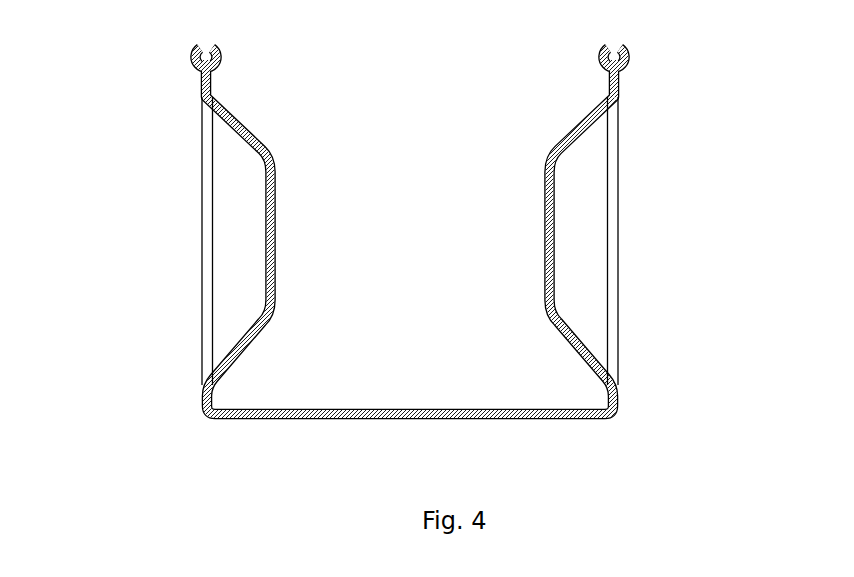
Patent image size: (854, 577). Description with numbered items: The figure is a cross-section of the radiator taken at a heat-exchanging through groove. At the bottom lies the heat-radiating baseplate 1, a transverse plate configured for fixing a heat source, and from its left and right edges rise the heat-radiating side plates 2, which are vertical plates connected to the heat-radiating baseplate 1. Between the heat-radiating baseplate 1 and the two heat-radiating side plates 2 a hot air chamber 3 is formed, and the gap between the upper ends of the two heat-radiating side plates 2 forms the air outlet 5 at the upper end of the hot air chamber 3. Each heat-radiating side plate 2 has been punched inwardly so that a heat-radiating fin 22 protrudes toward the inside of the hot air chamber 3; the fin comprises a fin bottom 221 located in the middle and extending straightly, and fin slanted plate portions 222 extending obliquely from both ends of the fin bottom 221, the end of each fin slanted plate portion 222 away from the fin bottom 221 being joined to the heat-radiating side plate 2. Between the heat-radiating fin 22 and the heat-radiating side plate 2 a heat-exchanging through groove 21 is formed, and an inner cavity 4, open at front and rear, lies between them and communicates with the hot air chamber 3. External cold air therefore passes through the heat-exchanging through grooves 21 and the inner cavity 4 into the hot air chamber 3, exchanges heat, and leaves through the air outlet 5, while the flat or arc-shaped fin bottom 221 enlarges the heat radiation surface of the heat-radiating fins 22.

The heat-radiating baseplate 1 is at (522, 418).
The heat-radiating side plates 2 is at (181, 231).
The heat-exchanging through grooves 21 is at (207, 303).
The heat-radiating fins 22 is at (263, 183).
The fin bottom 221 is at (555, 228).
The fin slanted plate portion 222 is at (580, 129).
The hot air chamber 3 is at (418, 360).
The inner cavity 4 is at (232, 258).
The air outlet 5 is at (422, 68).